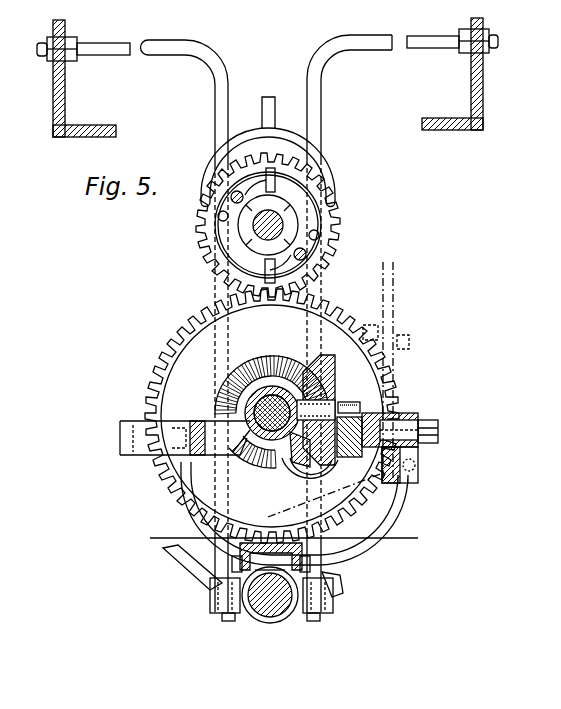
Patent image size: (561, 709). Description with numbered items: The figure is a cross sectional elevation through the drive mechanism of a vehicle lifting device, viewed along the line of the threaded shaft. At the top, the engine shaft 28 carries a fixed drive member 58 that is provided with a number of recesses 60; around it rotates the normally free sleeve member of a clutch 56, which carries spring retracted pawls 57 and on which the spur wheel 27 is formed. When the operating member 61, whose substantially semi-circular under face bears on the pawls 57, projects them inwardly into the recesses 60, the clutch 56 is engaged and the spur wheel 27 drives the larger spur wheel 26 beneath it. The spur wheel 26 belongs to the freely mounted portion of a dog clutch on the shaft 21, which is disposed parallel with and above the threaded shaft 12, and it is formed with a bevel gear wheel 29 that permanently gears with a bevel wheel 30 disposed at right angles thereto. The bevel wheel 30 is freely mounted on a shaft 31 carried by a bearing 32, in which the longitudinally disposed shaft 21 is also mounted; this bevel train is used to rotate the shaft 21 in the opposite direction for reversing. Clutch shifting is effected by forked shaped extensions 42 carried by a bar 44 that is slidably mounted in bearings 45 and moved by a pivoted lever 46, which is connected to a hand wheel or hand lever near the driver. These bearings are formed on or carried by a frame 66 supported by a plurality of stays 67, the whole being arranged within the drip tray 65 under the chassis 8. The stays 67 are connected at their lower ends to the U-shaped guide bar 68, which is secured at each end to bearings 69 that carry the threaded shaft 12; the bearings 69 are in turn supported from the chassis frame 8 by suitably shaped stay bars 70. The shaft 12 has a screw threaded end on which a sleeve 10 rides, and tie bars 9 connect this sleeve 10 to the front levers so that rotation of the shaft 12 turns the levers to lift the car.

The chassis 8 is at (65, 100).
The tie bars 9 is at (193, 594).
The sleeve 10 is at (268, 623).
The shaft 12 is at (280, 614).
The shaft 21 is at (265, 400).
The spur wheel 26 is at (170, 352).
The spur wheel 27 is at (205, 237).
The engine shaft 28 is at (253, 226).
The bevel gear wheel 29 is at (271, 358).
The bevel wheel 30 is at (323, 363).
The shaft 31 is at (348, 402).
The bearing 32 is at (241, 455).
The forked shaped extensions 42 is at (292, 363).
The bar 44 is at (433, 417).
The bearings 45 is at (396, 413).
The pivoted lever 46 is at (394, 384).
The clutch 56 is at (312, 187).
The spring retracted pawls 57 is at (270, 170).
The drive member 58 is at (277, 206).
The recesses 60 is at (303, 207).
The operating member 61 is at (276, 110).
The drip tray 65 is at (406, 540).
The frame 66 is at (200, 421).
The stays 67 is at (182, 518).
The U-shaped guide bar 68 is at (303, 549).
The bearings 69 is at (258, 620).
The stay bars 70 is at (99, 56).